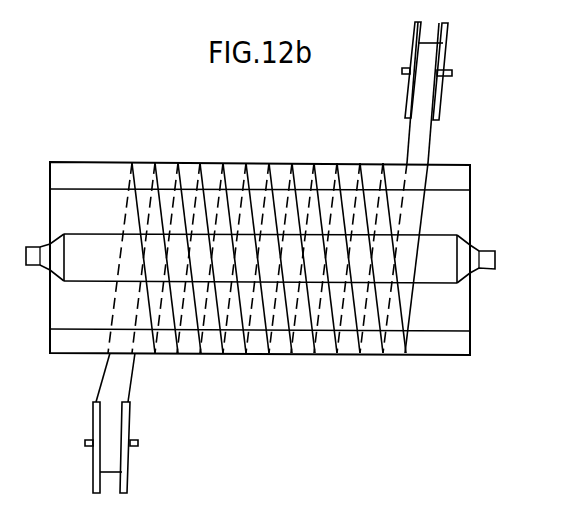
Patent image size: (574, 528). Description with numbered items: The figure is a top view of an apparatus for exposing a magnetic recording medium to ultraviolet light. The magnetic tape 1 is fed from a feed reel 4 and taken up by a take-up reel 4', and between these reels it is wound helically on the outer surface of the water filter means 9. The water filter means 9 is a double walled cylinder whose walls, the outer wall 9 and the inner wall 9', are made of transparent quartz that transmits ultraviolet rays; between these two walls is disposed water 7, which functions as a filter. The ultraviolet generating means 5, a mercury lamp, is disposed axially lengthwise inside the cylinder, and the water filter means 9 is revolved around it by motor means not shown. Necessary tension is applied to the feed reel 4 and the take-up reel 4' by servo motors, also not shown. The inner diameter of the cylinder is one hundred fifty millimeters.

The magnetic tape 1 is at (406, 131).
The feed reel 4 is at (98, 423).
The take-up reel 4' is at (440, 92).
The ultraviolet generating means 5 is at (436, 284).
The water 7 is at (67, 174).
The water filter means 9 is at (265, 230).
The inner wall 9' is at (273, 209).